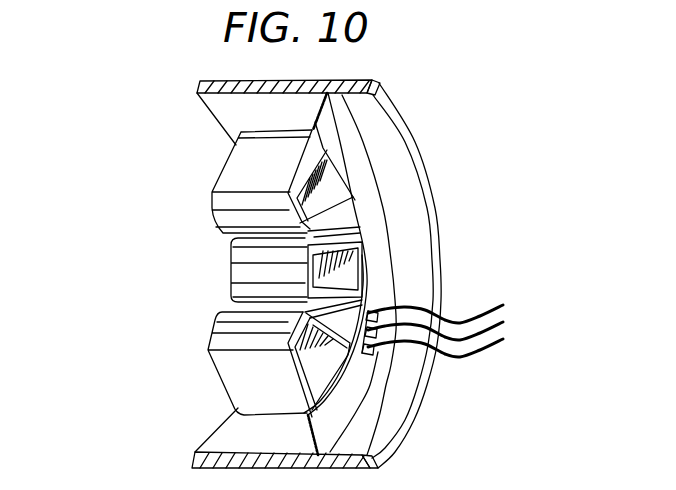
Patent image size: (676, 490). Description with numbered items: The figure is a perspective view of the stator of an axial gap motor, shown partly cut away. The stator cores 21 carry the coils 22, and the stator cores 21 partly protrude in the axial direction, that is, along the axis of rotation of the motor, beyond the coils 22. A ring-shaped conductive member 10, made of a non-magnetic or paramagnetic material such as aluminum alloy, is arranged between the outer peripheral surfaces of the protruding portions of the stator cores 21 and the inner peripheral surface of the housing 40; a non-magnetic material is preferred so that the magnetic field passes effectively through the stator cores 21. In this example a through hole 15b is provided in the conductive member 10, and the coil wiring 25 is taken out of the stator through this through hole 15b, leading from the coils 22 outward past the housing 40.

The conductive member 10 is at (372, 275).
The housing 40 is at (403, 185).
The stator core 21 is at (308, 190).
The coil 22 is at (253, 202).
The coil wiring 25 is at (513, 290).
The through hole 15b is at (362, 353).